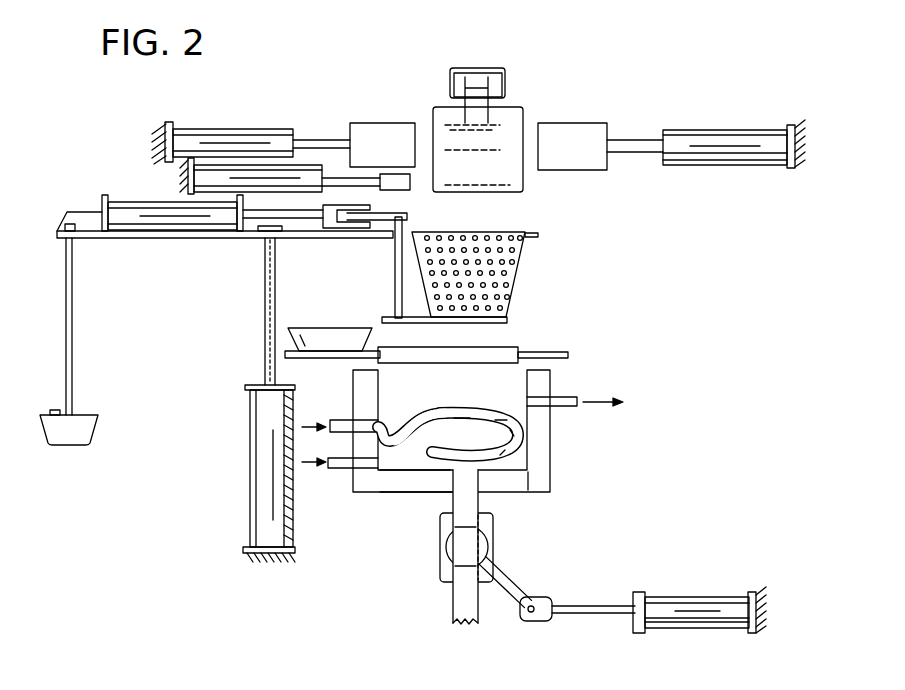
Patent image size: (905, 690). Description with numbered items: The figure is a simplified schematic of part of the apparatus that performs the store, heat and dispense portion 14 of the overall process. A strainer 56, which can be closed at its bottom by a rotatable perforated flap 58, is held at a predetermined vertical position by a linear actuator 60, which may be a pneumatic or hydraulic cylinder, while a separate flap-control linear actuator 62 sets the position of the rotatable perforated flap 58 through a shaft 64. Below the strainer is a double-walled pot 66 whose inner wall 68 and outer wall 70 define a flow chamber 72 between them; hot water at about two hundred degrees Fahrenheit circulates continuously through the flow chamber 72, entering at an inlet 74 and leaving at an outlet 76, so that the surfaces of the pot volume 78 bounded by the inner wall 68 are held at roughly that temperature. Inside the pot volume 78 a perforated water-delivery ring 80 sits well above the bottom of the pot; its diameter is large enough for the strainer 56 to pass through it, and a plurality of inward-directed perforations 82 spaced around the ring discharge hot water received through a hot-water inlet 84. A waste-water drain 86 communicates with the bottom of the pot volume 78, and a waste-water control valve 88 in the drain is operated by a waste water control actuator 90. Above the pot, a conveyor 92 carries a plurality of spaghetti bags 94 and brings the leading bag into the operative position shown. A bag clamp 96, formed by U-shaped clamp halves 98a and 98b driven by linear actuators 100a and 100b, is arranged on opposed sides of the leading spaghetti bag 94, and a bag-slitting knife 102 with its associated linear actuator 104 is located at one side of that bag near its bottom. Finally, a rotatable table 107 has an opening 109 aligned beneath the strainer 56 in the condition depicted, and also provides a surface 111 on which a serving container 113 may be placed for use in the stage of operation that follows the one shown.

The store, heat and dispense portion 14 is at (795, 82).
The strainer 56 is at (523, 260).
The rotatable perforated flap 58 is at (510, 324).
The linear actuator 60 is at (268, 447).
The flap-control linear actuator 62 is at (138, 238).
The shaft 64 is at (395, 256).
The double-walled pot 66 is at (586, 465).
The inner wall 68 is at (405, 463).
The outer wall 70 is at (415, 495).
The flow chamber 72 is at (527, 485).
The inlet 74 is at (338, 468).
The outlet 76 is at (570, 407).
The pot volume 78 is at (508, 378).
The perforated water-delivery ring 80 is at (422, 417).
The inward-directed perforations 82 is at (478, 415).
The hot-water inlet 84 is at (342, 420).
The waste-water drain 86 is at (457, 600).
The waste-water control valve 88 is at (485, 543).
The waste water control actuator 90 is at (665, 600).
The conveyor 92 is at (498, 72).
The spaghetti bag 94 is at (513, 115).
The bag clamp 96 is at (675, 185).
The U-shaped clamp half 98a is at (383, 123).
The U-shaped clamp half 98b is at (578, 128).
The linear actuator 100a is at (243, 130).
The linear actuator 100b is at (710, 132).
The bag-slitting knife 102 is at (410, 185).
The linear actuator 104 is at (213, 185).
The rotatable table 107 is at (298, 360).
The opening 109 is at (398, 350).
The surface 111 is at (338, 348).
The serving container 113 is at (302, 337).